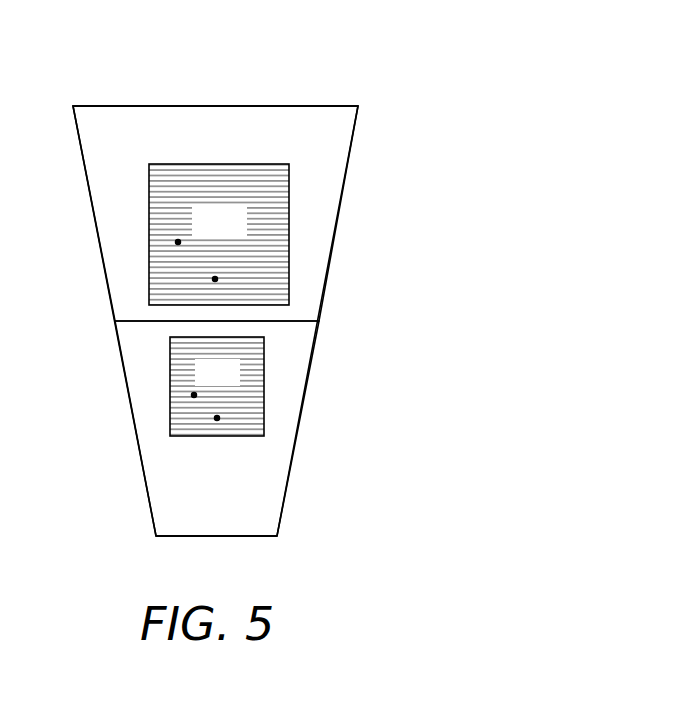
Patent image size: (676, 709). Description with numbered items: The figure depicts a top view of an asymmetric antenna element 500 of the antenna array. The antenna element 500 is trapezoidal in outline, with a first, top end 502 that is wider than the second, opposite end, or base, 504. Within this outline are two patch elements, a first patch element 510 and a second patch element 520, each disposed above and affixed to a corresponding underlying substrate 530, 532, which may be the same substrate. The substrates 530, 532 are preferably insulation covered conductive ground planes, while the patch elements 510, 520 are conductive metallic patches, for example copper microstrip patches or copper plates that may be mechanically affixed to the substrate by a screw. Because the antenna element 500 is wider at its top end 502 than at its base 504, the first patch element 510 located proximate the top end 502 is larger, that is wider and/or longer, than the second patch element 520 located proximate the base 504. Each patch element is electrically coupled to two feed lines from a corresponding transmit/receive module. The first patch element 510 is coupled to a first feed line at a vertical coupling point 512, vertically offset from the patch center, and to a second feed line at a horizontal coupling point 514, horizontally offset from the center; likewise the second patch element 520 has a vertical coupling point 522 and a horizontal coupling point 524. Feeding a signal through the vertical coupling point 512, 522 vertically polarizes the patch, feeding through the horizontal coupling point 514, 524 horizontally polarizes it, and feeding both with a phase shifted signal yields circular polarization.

The asymmetric antenna element 500 is at (73, 53).
The top end 502 is at (244, 106).
The base 504 is at (243, 536).
The first patch element 510 is at (239, 233).
The vertical coupling point 512 is at (215, 279).
The horizontal coupling point 514 is at (178, 242).
The second patch element 520 is at (237, 383).
The vertical coupling point 522 is at (217, 418).
The horizontal coupling point 524 is at (194, 395).
The substrate 530 is at (239, 148).
The substrate 532 is at (237, 523).